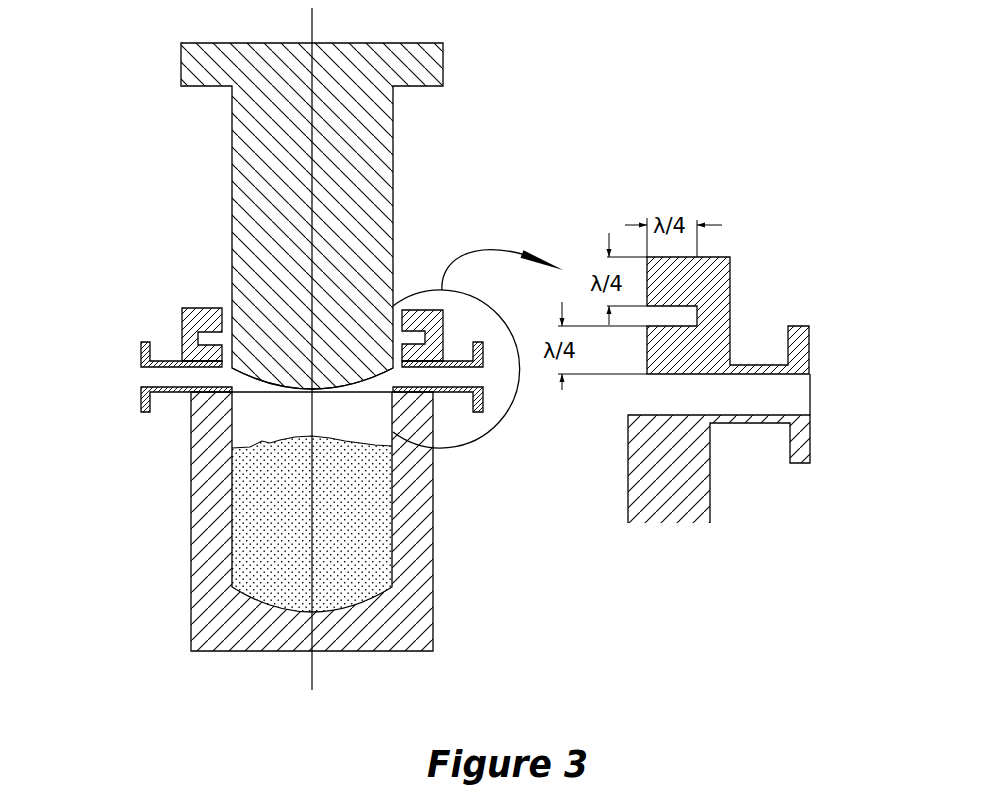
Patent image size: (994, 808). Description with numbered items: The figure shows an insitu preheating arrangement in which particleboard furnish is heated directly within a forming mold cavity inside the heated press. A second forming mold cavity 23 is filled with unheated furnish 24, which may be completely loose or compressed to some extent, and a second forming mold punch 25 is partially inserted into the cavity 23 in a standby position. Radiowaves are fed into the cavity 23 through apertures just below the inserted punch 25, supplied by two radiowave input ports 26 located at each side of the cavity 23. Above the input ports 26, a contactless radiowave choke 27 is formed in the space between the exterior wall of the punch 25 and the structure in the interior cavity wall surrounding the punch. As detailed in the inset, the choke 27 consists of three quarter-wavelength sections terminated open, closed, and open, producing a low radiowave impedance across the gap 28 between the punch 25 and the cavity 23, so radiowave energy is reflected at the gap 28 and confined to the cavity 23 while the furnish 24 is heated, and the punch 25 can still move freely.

The second forming mold cavity 23 is at (433, 580).
The unheated furnish 24 is at (285, 513).
The second forming mold punch 25 is at (393, 133).
The radiowave input ports 26 is at (141, 375).
The contactless radiowave choke 27 is at (182, 308).
The gap 28 is at (230, 368).